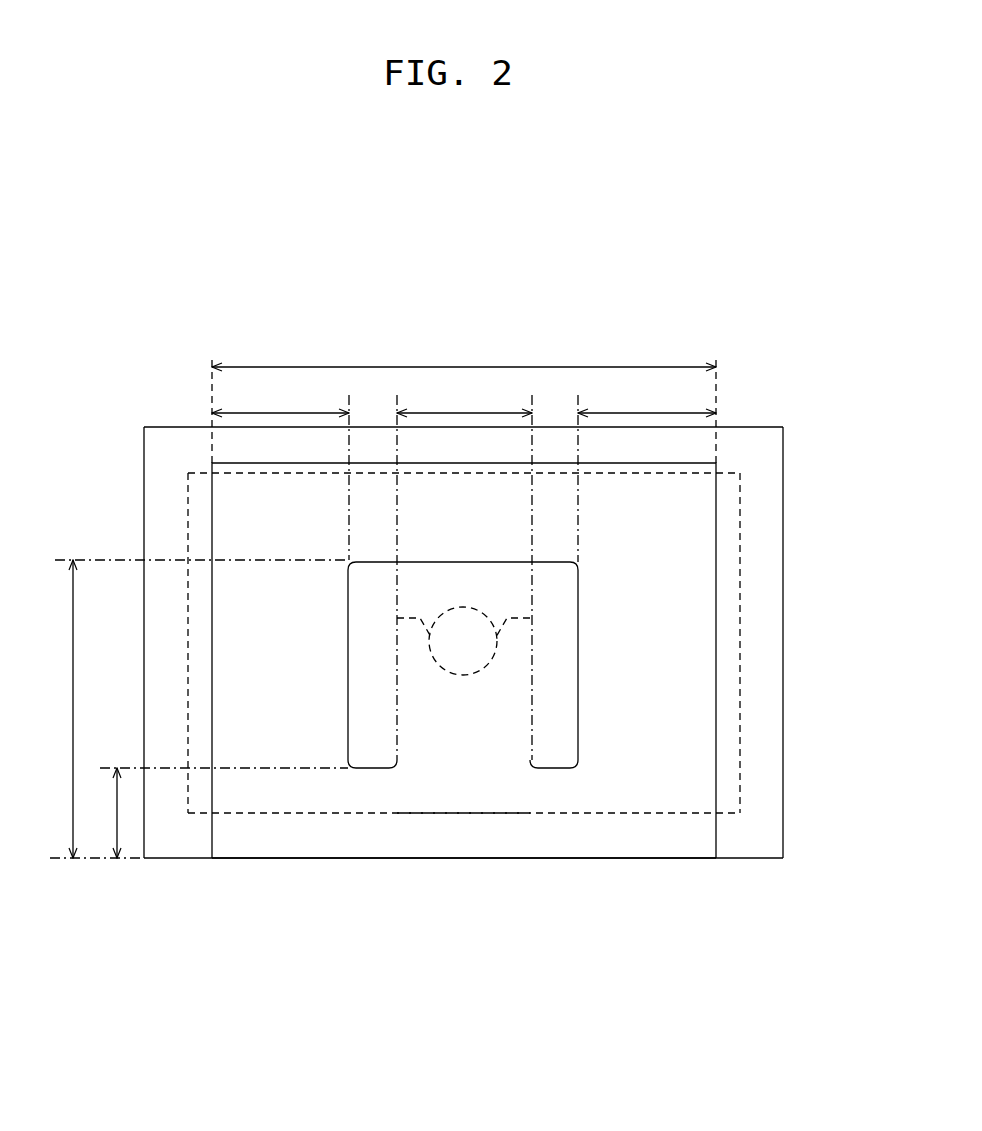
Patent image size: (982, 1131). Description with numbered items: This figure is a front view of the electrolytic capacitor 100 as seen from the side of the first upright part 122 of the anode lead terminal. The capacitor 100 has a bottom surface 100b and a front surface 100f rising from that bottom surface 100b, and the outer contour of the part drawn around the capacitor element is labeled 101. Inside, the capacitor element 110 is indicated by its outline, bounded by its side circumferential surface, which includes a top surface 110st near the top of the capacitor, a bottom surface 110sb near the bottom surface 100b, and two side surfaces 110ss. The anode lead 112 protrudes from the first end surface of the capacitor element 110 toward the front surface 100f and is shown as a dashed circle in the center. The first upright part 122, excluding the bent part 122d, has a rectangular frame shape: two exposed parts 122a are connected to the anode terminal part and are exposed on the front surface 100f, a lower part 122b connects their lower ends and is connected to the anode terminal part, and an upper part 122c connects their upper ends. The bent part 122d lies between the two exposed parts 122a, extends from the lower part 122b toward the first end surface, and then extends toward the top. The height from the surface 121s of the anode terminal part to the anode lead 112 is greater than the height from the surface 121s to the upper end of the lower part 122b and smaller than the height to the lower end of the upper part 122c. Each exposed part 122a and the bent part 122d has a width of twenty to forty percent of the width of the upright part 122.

The electrolytic capacitor 100 is at (160, 371).
The front surface 100f is at (167, 473).
The bottom surface 100b is at (733, 861).
The substrate 101 is at (770, 500).
The capacitor element 110 is at (741, 552).
The side surfaces 110ss is at (184, 530).
The top surface 110st is at (364, 471).
The bottom surface 110sb is at (291, 816).
The anode lead 112 is at (478, 638).
The surface 121s is at (245, 861).
The first upright part 122 is at (640, 992).
The exposed parts 122a is at (295, 738).
The lower part 122b is at (413, 830).
The upper part 122c is at (515, 540).
The bent part 122d is at (452, 715).